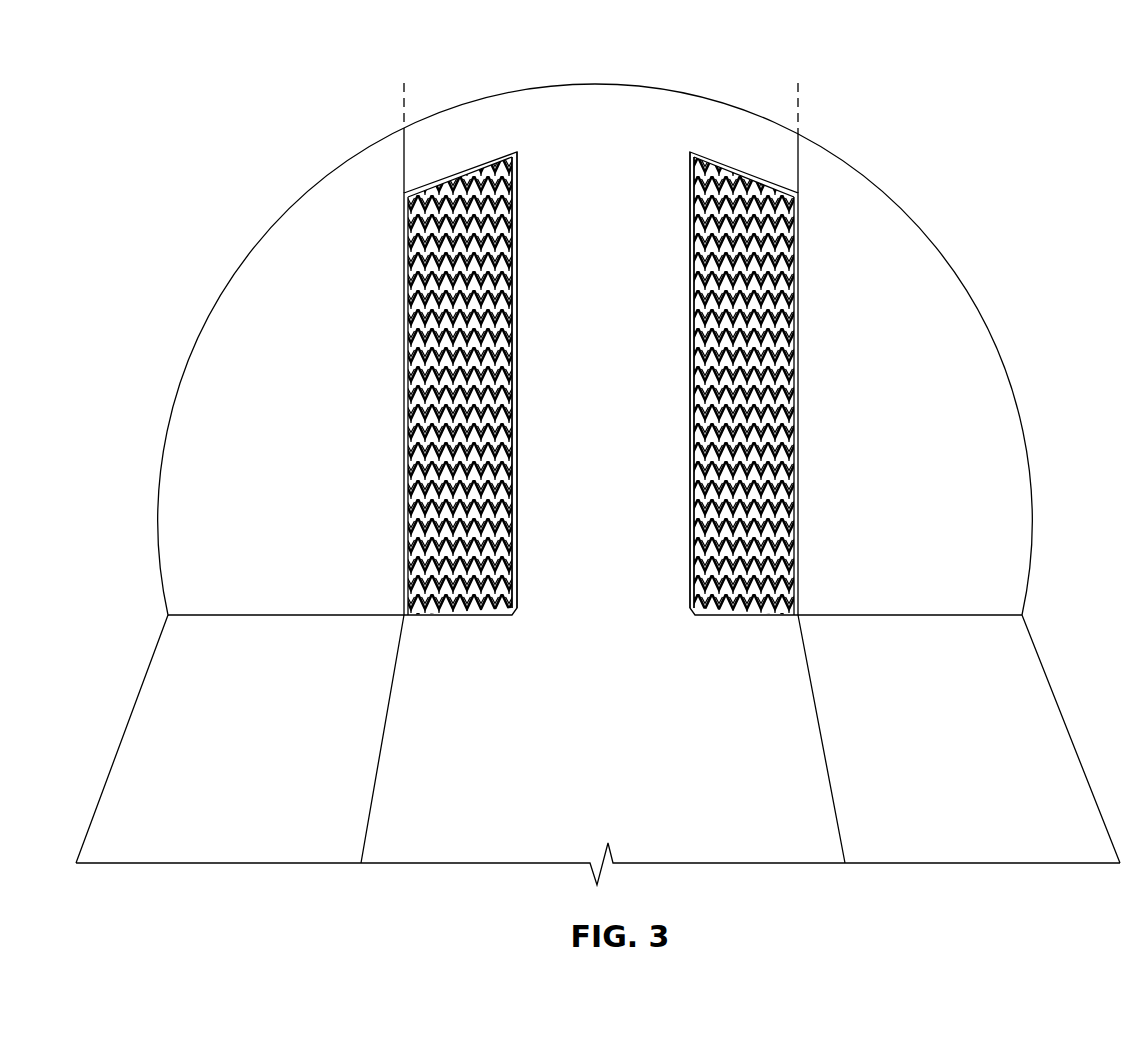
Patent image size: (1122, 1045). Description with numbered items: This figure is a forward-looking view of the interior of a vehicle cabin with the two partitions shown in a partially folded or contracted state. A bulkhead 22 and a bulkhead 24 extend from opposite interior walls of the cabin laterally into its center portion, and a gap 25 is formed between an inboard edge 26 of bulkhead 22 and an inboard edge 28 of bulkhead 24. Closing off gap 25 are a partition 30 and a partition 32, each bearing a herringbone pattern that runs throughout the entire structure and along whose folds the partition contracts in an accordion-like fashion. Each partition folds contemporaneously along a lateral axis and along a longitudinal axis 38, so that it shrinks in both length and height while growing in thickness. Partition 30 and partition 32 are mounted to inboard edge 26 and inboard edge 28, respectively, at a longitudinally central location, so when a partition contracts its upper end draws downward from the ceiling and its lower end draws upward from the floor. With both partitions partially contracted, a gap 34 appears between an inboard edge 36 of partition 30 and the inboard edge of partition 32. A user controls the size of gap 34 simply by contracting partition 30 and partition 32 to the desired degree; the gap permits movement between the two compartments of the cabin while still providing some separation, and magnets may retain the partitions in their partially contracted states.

The bulkhead 22 is at (196, 348).
The bulkhead 24 is at (1000, 377).
The gap 25 is at (798, 83).
The inboard edge of bulkhead 22 26 is at (492, 414).
The inboard edge of bulkhead 24 28 is at (711, 414).
The partition 30 is at (505, 518).
The partition 32 is at (708, 515).
The gap 34 is at (690, 244).
The inboard edge of partition 30 36 is at (512, 353).
The longitudinal axis 38 is at (695, 330).